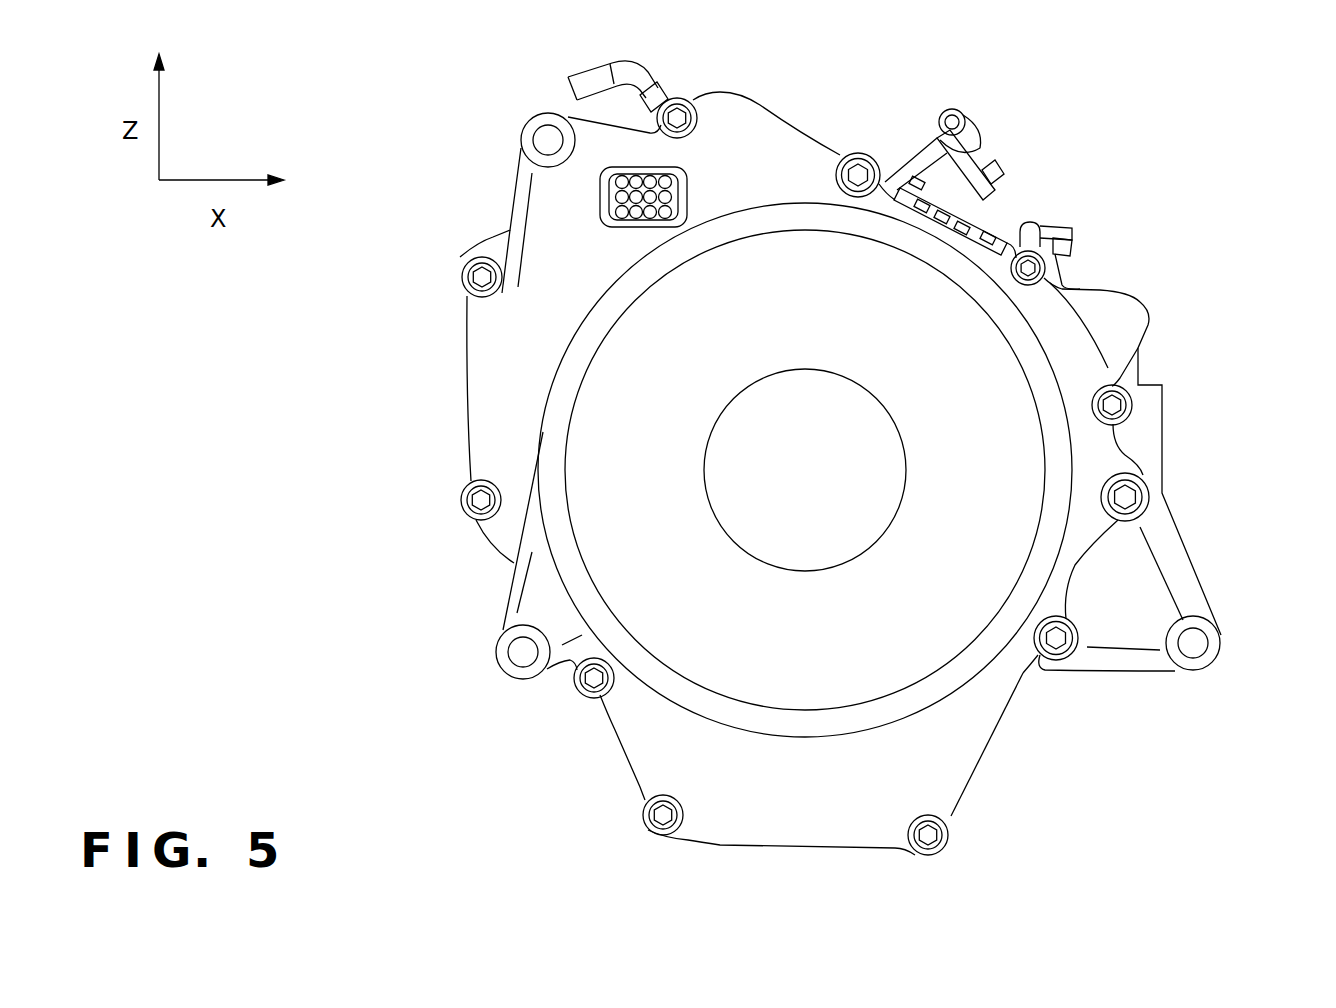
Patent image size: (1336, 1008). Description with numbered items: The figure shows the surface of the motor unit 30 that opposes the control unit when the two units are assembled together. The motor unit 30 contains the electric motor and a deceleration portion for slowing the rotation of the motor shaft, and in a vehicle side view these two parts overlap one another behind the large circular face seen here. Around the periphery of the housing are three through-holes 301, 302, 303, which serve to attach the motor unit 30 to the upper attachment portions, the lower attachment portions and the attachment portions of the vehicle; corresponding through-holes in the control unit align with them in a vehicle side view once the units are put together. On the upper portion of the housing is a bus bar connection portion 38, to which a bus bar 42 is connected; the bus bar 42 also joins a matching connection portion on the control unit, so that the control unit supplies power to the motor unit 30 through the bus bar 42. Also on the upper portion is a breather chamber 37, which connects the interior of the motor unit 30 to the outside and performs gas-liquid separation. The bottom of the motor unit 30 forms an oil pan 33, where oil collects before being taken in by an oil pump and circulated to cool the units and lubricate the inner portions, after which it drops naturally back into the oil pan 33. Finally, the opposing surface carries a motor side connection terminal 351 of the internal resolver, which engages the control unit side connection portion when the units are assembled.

The motor unit 30 is at (1225, 182).
The through-hole 301 is at (531, 140).
The through-hole 302 is at (502, 653).
The through-hole 303 is at (1215, 668).
The oil pan 33 is at (927, 787).
The motor side connection terminal 351 is at (597, 198).
The breather chamber 37 is at (755, 127).
The bus bar connection portion 38 is at (977, 213).
The bus bar 42 is at (962, 230).